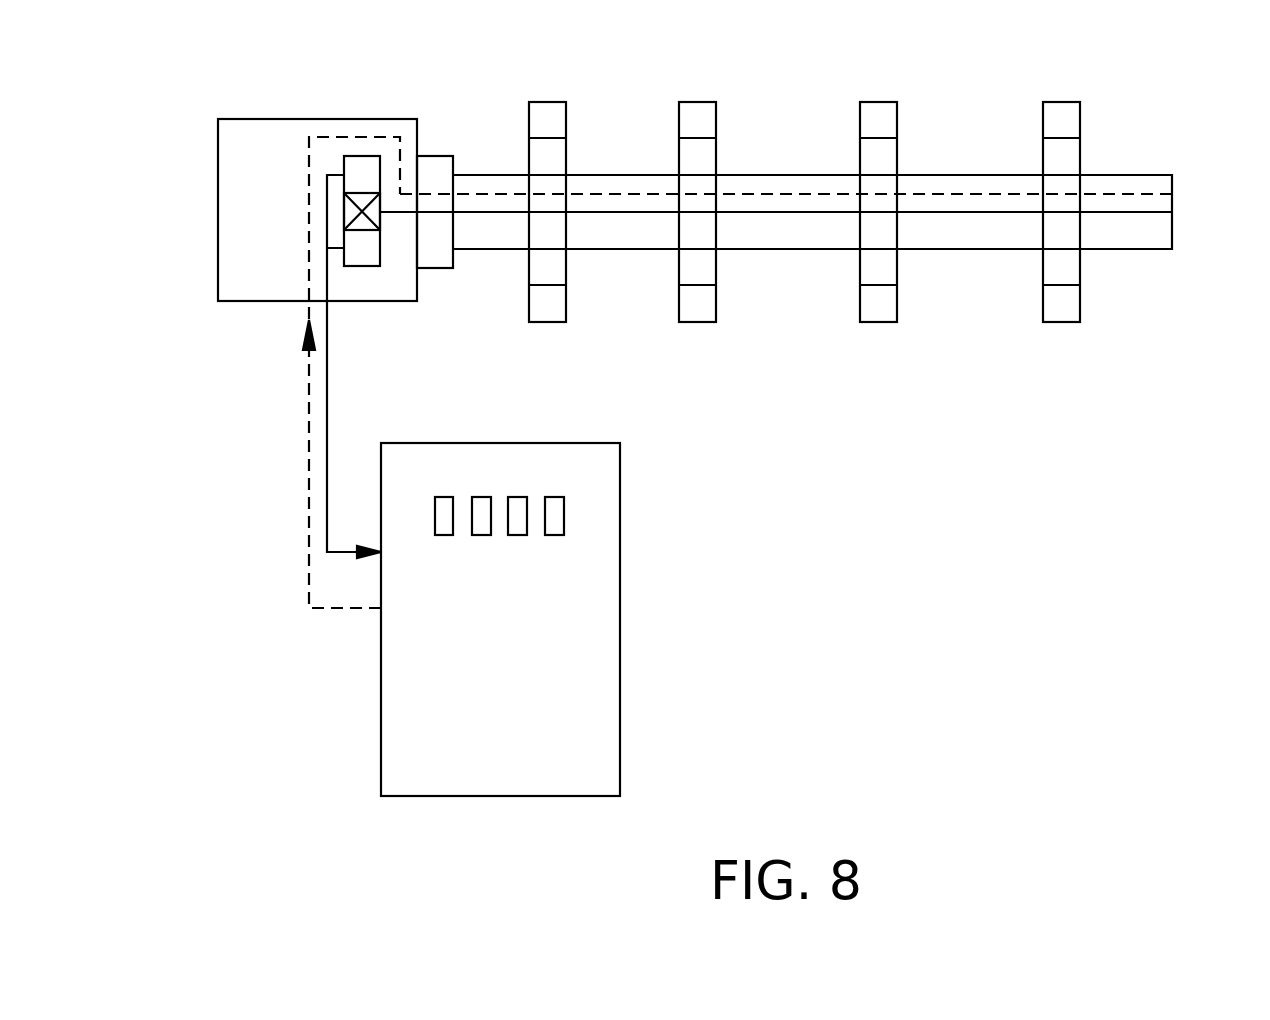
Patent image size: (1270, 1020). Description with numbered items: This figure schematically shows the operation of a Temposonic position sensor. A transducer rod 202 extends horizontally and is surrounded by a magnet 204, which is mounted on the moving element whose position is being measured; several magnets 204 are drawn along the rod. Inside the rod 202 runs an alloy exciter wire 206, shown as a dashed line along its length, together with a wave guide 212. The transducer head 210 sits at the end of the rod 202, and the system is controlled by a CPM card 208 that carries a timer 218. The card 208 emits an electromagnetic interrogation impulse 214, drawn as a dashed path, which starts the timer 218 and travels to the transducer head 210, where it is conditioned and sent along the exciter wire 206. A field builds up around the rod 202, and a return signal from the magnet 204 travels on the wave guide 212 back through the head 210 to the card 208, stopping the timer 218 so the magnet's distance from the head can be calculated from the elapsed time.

The transducer rod 202 is at (1163, 240).
The magnet 204 is at (553, 112).
The exciter wire 206 is at (507, 193).
The CPM card 208 is at (605, 600).
The transducer head 210 is at (252, 137).
The wave guide 212 is at (497, 213).
The interrogation impulse 214 is at (307, 537).
The timer 218 is at (557, 510).